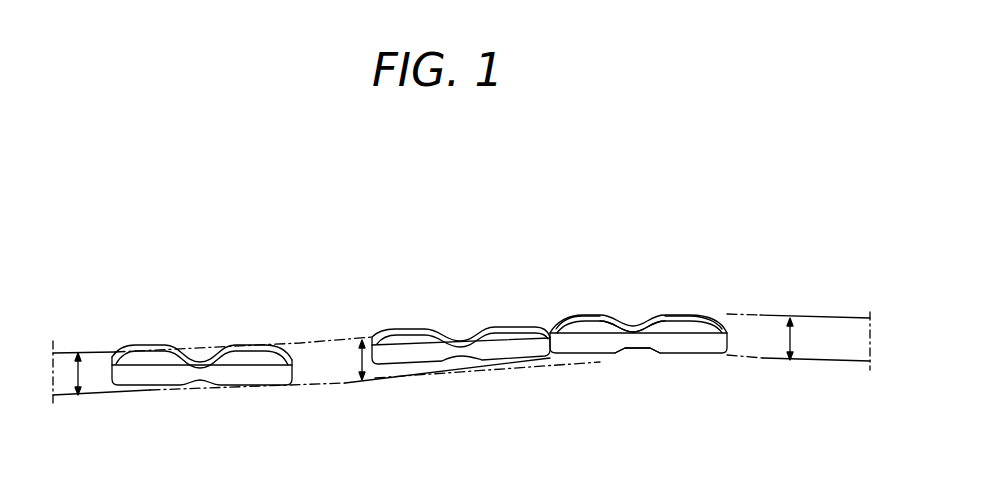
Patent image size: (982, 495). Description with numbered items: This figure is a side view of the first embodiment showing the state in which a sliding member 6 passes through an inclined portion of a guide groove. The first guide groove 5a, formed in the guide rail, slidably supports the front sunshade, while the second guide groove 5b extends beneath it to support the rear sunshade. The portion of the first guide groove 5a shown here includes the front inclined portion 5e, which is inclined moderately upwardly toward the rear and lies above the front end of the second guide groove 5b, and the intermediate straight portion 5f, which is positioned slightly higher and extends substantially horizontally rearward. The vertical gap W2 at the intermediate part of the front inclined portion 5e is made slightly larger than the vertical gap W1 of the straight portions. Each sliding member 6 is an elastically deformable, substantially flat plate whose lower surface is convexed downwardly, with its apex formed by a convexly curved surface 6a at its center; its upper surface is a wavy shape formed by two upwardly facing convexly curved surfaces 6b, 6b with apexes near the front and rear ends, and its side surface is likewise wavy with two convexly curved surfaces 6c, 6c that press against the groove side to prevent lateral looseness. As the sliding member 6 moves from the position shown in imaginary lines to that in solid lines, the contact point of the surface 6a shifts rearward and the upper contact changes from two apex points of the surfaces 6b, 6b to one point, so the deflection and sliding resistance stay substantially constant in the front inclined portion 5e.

The first guide groove 5a is at (818, 317).
The second guide groove 5b is at (100, 383).
The front inclined portion 5e is at (470, 330).
The intermediate straight portion 5f is at (762, 330).
The sliding member 6 is at (263, 373).
The convexly curved surface 6a is at (627, 355).
The convexly curved continuous surfaces 6b is at (577, 317).
The convexly curved continuous surfaces 6c is at (600, 340).
The vertical gap W1 is at (90, 378).
The vertical gap W2 is at (357, 350).